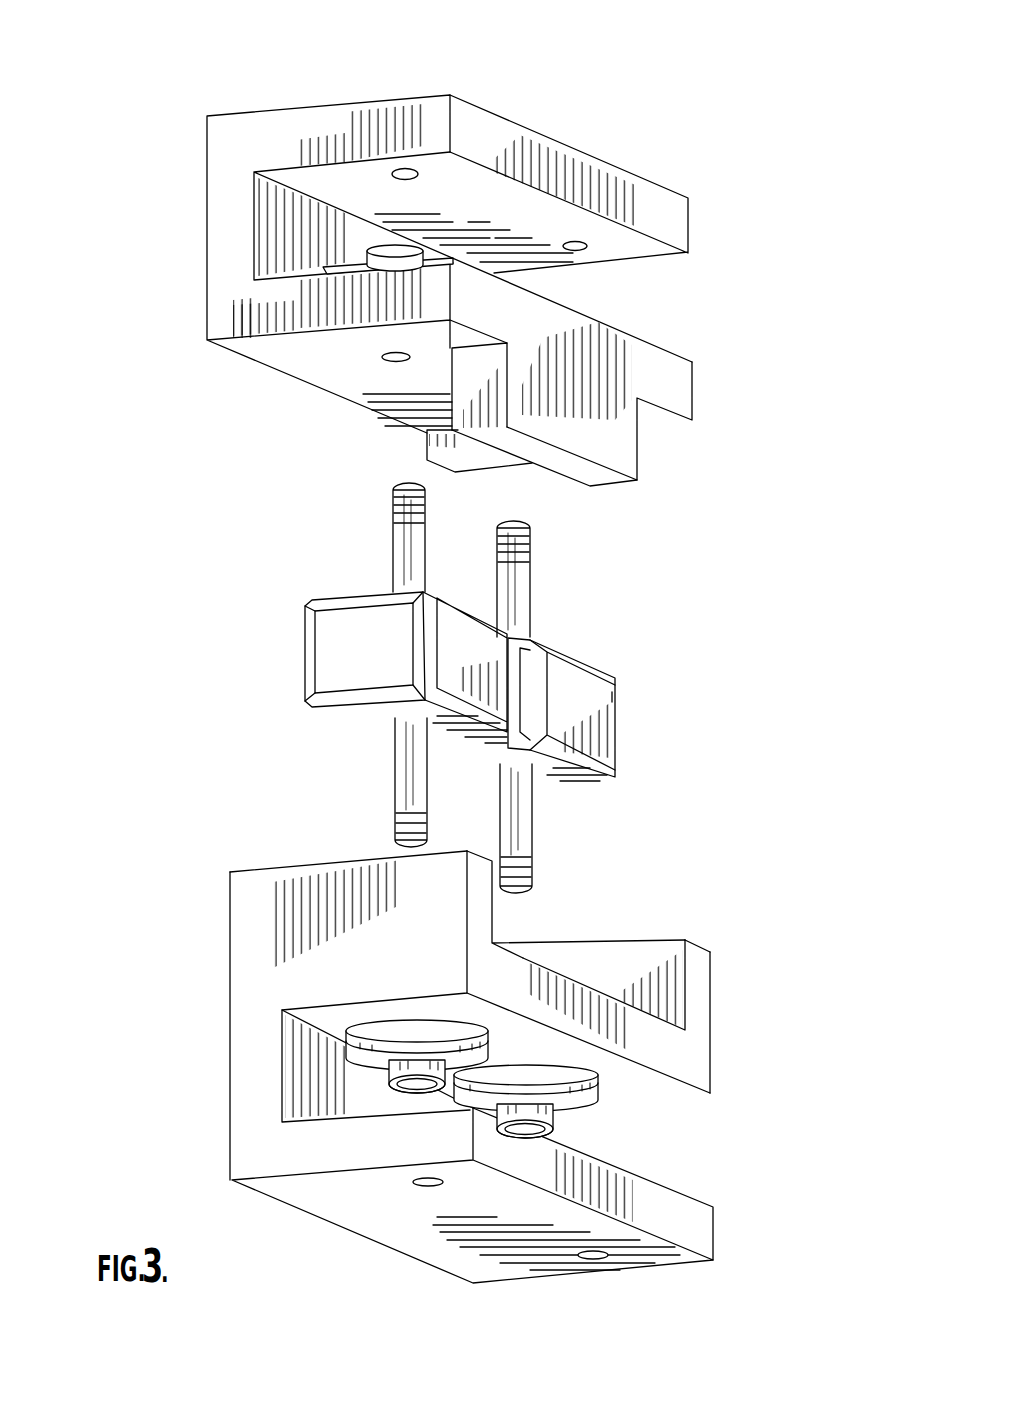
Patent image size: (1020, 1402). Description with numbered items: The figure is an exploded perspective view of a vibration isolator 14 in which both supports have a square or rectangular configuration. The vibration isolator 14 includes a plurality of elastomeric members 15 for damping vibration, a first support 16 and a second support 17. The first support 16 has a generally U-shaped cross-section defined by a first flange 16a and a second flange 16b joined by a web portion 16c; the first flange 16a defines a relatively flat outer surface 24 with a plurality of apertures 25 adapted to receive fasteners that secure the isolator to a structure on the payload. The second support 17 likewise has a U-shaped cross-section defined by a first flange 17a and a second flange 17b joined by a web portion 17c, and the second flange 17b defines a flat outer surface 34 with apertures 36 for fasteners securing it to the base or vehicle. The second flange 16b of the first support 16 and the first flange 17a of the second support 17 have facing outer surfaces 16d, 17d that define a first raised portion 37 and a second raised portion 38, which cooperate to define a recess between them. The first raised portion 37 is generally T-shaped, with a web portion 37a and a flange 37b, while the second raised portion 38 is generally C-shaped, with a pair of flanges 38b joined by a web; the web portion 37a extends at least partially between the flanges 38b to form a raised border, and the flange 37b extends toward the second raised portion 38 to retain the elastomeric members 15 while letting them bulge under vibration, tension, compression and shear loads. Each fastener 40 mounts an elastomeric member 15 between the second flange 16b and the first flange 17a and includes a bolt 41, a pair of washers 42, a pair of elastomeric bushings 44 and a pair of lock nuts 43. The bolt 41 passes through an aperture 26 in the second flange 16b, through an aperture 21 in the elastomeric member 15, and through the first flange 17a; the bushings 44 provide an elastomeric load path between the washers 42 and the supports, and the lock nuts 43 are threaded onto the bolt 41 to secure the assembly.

The vibration isolator 14 is at (180, 1162).
The elastomeric member 15 is at (340, 716).
The first support 16 is at (218, 258).
The first flange of first support 16a is at (690, 216).
The second flange of first support 16b is at (690, 386).
The web portion of first support 16c is at (207, 205).
The facing outer surface of second flange 16d is at (399, 398).
The second support 17 is at (382, 1232).
The first flange of second support 17a is at (712, 1062).
The second flange of second support 17b is at (712, 1224).
The web portion of second support 17c is at (253, 978).
The facing outer surface of first flange 17d is at (614, 938).
The aperture of elastomeric member 21 is at (398, 735).
The outer surface of first flange 24 is at (405, 85).
The apertures of outer surface 25 is at (425, 168).
The aperture of second flange 26 is at (393, 362).
The outer surface of second flange 34 is at (474, 1232).
The apertures of outer surface 36 is at (412, 1186).
The first raised portion 37 is at (504, 472).
The web portion of first raised portion 37a is at (614, 484).
The flange of first raised portion 37b is at (467, 473).
The second raised portion 38 is at (580, 940).
The flanges of second raised portion 38b is at (330, 862).
The fastener 40 is at (327, 240).
The bolt 41 is at (396, 758).
The washer 42 is at (345, 1058).
The lock nut 43 is at (385, 1077).
The elastomeric bushing 44 is at (352, 1039).